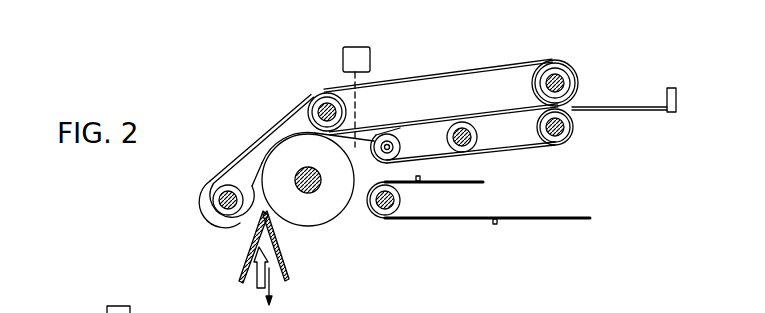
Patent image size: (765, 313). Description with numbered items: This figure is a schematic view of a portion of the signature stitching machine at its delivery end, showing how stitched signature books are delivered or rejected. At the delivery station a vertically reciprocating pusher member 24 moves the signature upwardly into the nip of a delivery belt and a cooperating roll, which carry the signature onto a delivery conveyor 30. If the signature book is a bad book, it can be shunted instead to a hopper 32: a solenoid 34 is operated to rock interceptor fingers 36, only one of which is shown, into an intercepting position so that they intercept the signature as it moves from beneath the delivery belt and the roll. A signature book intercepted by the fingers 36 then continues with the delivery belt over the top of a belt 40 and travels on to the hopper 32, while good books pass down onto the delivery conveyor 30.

The pusher member 24 is at (275, 270).
The delivery conveyor 30 is at (448, 218).
The hopper 32 is at (663, 112).
The solenoid 34 is at (370, 60).
The interceptor fingers 36 is at (362, 142).
The belt 40 is at (512, 157).